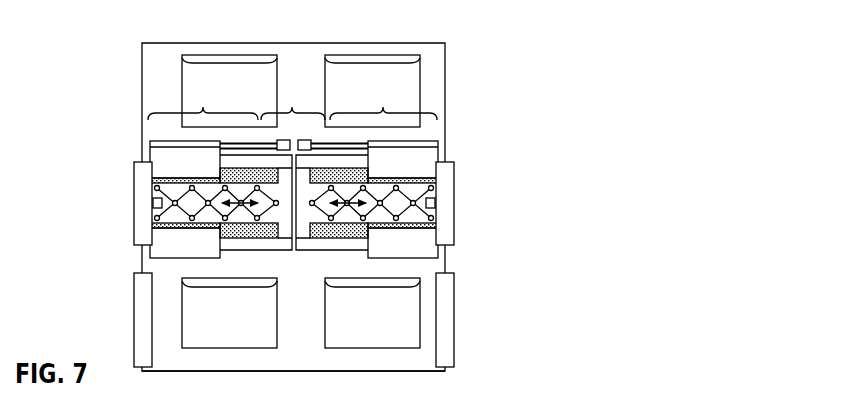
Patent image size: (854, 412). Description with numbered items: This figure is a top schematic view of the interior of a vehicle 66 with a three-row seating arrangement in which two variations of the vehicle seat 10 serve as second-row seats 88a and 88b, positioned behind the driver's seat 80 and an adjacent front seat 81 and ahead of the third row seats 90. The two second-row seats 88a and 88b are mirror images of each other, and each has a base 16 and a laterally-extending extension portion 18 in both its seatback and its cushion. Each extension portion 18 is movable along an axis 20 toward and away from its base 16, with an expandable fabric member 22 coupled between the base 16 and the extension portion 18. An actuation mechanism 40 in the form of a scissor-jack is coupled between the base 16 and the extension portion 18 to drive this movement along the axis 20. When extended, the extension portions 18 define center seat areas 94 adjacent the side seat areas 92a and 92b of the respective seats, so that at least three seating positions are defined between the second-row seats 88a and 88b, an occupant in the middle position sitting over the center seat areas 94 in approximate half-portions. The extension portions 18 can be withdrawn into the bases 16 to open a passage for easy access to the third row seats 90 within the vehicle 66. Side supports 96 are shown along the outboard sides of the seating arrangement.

The vehicle seat 10 is at (124, 149).
The base 16 is at (165, 145).
The extension portion 18 is at (304, 140).
The axis 20 is at (245, 238).
The expandable fabric member 22 is at (248, 170).
The actuation mechanism 40 is at (154, 213).
The vehicle 66 is at (452, 372).
The driver's seat 80 is at (401, 329).
The first cell 81 is at (208, 329).
The second-row seat 88a is at (141, 254).
The second-row seat 88b is at (448, 254).
The third row seats 90 is at (200, 83).
The side seat area 92a is at (203, 107).
The side seat area 92b is at (383, 107).
The center seat area 94 is at (293, 107).
The side support 96 is at (145, 203).